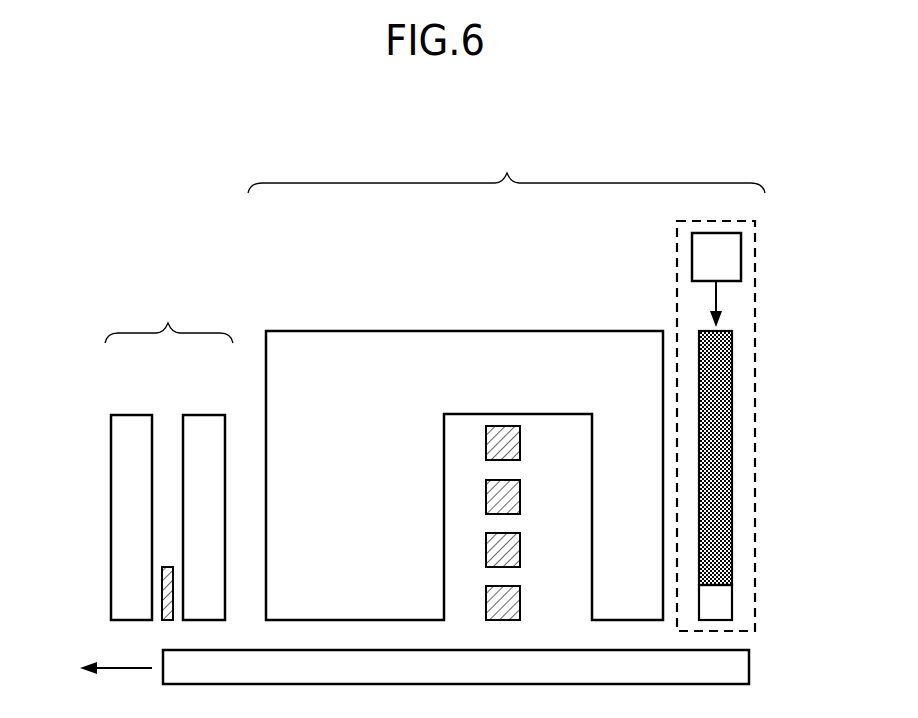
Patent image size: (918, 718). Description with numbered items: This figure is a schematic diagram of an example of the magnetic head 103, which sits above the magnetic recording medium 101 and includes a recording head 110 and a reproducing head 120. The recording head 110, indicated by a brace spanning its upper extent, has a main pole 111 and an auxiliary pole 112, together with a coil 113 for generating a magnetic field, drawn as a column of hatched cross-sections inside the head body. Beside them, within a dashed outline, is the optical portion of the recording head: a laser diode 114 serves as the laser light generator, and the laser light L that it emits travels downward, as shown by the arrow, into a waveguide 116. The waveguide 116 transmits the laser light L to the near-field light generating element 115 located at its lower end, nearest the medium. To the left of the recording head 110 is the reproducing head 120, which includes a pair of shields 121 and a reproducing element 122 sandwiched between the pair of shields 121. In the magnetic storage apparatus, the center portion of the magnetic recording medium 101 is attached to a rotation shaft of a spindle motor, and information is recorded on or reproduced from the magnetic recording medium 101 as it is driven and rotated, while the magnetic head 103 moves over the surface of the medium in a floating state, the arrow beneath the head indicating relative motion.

The magnetic recording medium 101 is at (737, 667).
The magnetic head 103 is at (817, 144).
The recording head 110 is at (540, 383).
The main pole 111 is at (650, 548).
The auxiliary pole 112 is at (417, 530).
The coil 113 is at (503, 442).
The laser diode 114 is at (717, 262).
The laser light L is at (720, 300).
The waveguide 116 is at (715, 370).
The near-field light generating element 115 is at (716, 602).
The reproducing head 120 is at (137, 471).
The pair of shields 121 is at (205, 430).
The reproducing element 122 is at (167, 613).